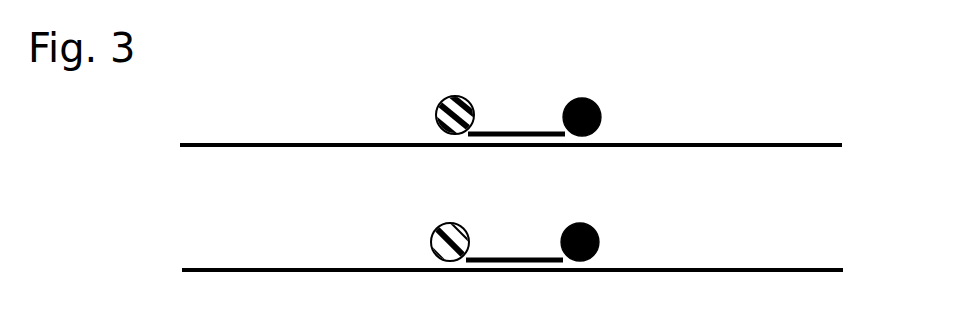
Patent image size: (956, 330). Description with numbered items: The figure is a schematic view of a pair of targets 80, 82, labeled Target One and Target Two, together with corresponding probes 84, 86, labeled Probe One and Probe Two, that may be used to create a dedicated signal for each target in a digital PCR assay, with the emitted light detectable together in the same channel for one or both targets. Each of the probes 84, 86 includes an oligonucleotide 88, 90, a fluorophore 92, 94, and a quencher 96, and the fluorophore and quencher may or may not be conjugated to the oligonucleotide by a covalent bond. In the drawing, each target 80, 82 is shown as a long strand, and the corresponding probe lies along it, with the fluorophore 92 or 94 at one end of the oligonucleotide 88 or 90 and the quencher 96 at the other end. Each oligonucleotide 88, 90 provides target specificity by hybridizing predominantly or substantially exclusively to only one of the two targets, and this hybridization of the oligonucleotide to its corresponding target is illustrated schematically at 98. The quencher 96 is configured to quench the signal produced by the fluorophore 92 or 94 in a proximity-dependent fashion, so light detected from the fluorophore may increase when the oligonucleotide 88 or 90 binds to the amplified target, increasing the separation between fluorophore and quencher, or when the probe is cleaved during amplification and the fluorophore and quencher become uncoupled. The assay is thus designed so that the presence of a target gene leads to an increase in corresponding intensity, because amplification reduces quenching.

The target 80 is at (308, 143).
The target 82 is at (306, 268).
The probe 84 is at (583, 60).
The probe 86 is at (582, 184).
The oligonucleotide 88 is at (492, 131).
The oligonucleotide 90 is at (492, 258).
The fluorophore 92 is at (453, 96).
The fluorophore 94 is at (455, 223).
The quencher 96 is at (595, 102).
The hybridization 98 is at (610, 137).